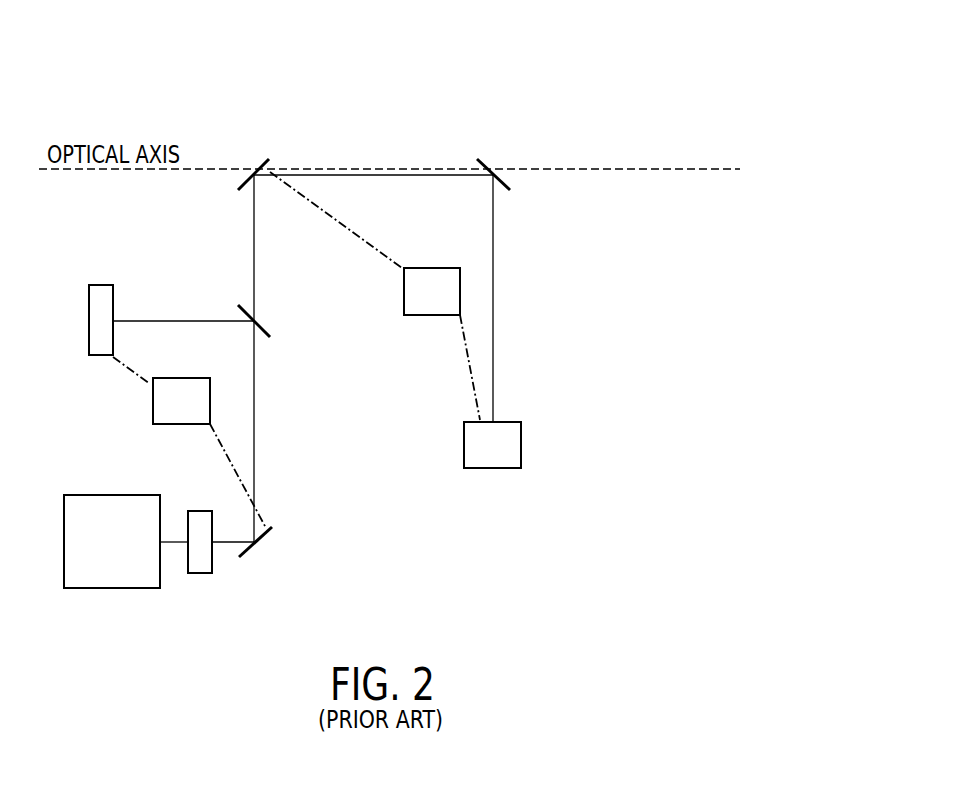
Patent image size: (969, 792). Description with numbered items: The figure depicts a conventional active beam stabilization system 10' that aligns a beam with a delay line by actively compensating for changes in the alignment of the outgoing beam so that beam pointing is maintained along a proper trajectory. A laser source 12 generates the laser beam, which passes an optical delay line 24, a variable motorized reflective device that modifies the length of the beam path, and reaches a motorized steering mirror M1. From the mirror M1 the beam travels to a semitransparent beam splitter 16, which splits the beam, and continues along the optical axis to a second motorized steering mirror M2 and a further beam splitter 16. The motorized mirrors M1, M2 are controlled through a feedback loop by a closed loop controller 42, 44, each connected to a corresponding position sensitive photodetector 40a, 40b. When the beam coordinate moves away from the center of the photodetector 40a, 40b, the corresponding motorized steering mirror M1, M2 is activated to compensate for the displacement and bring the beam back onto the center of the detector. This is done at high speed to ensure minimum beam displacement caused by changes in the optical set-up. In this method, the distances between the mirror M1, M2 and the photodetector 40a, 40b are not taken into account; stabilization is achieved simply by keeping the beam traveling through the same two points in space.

The active beam stabilization system 10' is at (74, 68).
The laser source 12 is at (64, 540).
The optical delay line 24 is at (205, 590).
The semitransparent beam splitter 16 is at (486, 165).
The motorized steering mirror M1 is at (268, 547).
The motorized steering mirror M2 is at (237, 178).
The position sensitive photodetector 40a is at (89, 322).
The position sensitive photodetector 40b is at (521, 444).
The closed loop controller 42 is at (153, 402).
The closed loop controller 44 is at (404, 292).